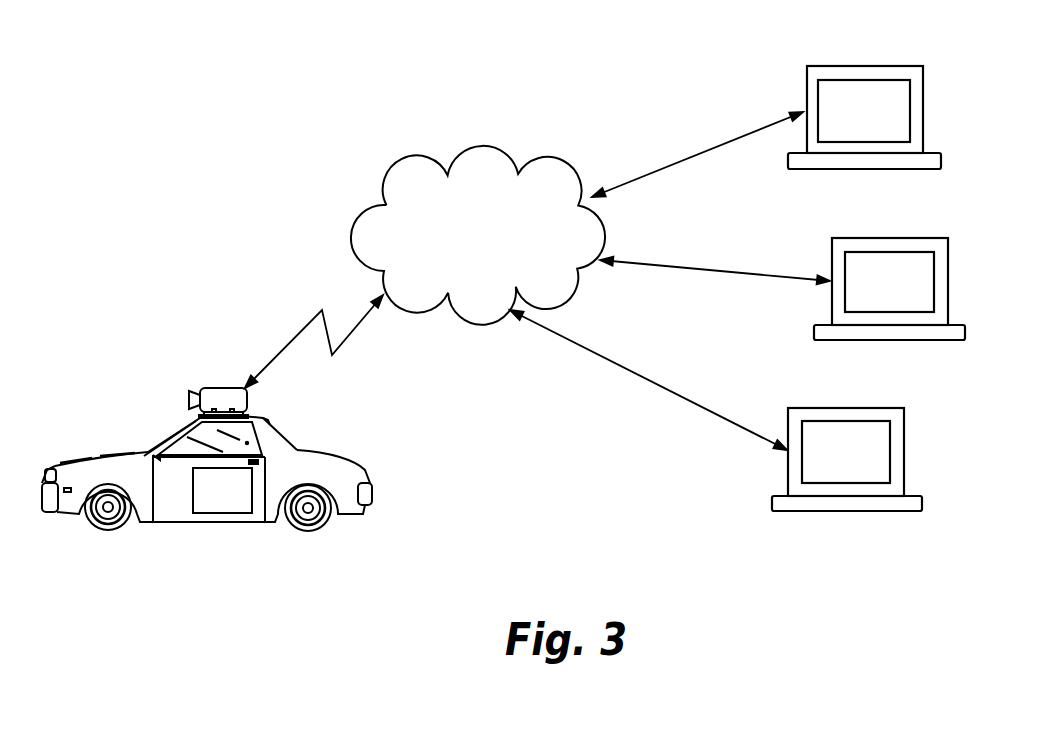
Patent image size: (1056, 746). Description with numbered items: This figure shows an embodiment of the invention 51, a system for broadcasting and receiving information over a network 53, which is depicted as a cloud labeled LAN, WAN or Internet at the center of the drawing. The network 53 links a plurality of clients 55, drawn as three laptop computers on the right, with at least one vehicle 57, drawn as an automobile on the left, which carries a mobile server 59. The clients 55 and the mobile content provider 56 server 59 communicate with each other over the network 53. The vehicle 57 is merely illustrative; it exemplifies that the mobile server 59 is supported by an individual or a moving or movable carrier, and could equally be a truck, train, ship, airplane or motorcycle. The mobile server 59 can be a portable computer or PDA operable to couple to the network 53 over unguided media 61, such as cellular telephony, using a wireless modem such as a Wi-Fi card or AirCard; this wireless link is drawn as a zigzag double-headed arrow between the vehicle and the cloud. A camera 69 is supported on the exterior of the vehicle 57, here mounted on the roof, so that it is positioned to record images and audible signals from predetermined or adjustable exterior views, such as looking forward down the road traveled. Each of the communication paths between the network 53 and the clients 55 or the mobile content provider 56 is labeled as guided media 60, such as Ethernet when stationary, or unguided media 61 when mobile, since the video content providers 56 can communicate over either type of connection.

The embodiment of the invention 51 is at (384, 70).
The network 53 is at (398, 163).
The clients 55 is at (923, 107).
The mobile content provider 56 is at (158, 433).
The vehicle 57 is at (207, 515).
The mobile server 59 is at (222, 490).
The guided media 60 is at (519, 281).
The unguided media 61 is at (310, 320).
The camera 69 is at (220, 388).